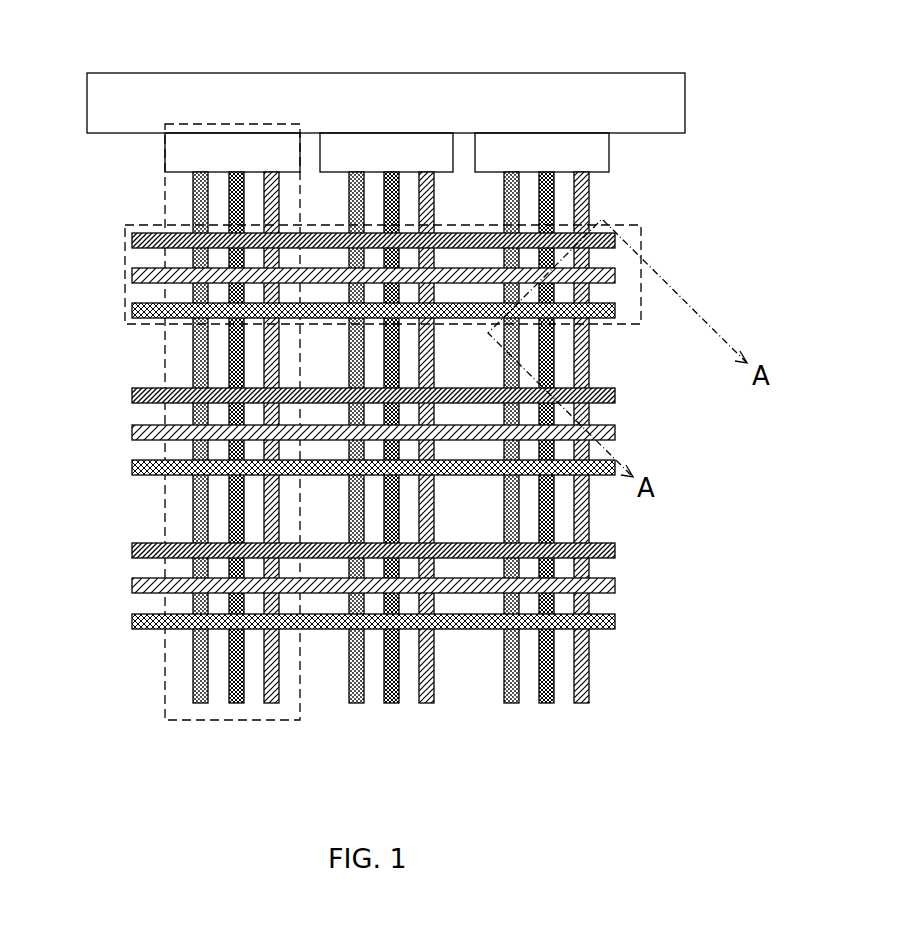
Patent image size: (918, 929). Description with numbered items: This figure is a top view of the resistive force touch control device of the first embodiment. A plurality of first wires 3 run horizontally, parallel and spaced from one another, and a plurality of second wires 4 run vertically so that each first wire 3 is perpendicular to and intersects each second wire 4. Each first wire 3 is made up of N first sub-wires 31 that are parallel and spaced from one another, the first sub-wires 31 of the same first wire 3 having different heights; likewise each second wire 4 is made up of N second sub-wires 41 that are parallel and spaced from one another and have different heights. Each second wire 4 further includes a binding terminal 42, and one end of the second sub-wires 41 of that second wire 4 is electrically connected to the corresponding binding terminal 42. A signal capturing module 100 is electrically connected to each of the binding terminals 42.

The signal capturing module 100 is at (485, 92).
The binding terminal 42 is at (230, 150).
The second wire 4 is at (319, 445).
The second sub-wire 41 is at (230, 357).
The first wire 3 is at (345, 425).
The first sub-wire 31 is at (132, 238).